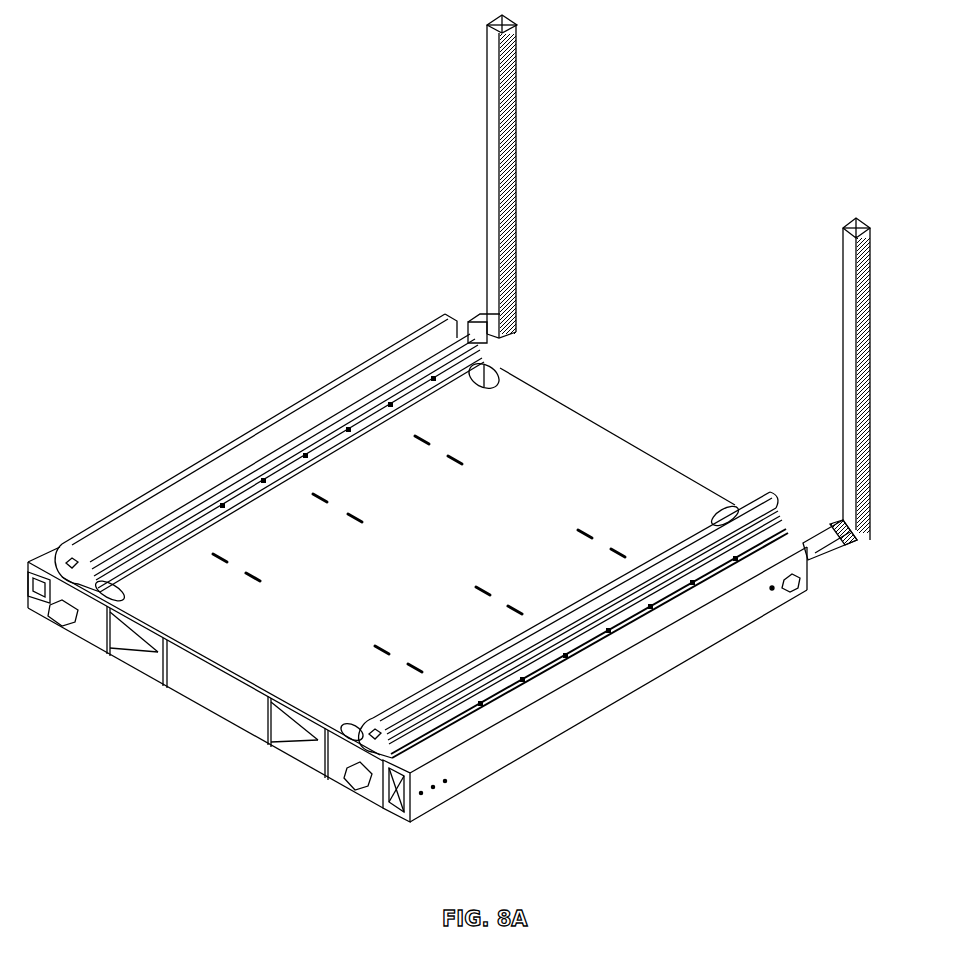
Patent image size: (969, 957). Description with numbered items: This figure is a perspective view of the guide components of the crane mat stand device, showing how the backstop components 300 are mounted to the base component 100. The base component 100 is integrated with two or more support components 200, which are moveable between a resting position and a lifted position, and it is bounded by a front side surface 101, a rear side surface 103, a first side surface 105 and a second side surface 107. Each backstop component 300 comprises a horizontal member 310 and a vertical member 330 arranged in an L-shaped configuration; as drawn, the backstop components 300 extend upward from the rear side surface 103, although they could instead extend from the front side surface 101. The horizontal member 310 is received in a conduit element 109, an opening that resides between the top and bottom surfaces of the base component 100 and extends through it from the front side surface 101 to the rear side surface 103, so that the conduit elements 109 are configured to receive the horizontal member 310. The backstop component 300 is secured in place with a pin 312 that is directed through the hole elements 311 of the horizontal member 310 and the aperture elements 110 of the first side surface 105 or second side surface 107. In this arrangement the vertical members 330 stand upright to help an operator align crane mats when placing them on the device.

The base component 100 is at (372, 488).
The front side surface 101 is at (202, 678).
The rear side surface 103 is at (607, 435).
The first side surface 105 is at (628, 672).
The second side surface 107 is at (92, 525).
The conduit element 109 is at (395, 805).
The aperture element 110 is at (772, 588).
The support component 200 is at (418, 710).
The backstop component 300 is at (507, 125).
The horizontal member 310 is at (492, 337).
The hole element 311 is at (832, 553).
The pin 312 is at (790, 595).
The vertical member 330 is at (495, 173).